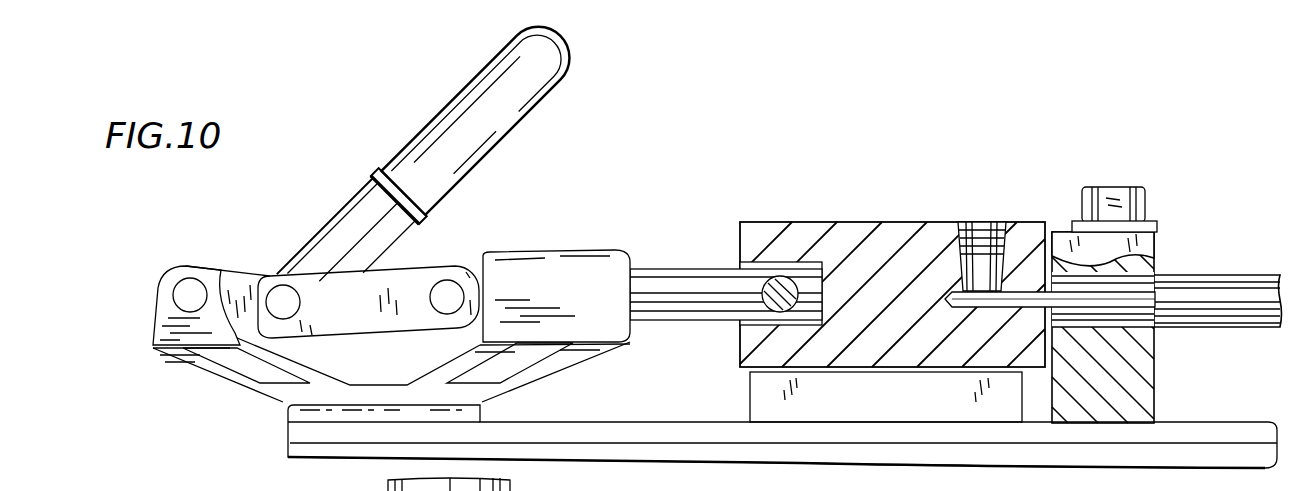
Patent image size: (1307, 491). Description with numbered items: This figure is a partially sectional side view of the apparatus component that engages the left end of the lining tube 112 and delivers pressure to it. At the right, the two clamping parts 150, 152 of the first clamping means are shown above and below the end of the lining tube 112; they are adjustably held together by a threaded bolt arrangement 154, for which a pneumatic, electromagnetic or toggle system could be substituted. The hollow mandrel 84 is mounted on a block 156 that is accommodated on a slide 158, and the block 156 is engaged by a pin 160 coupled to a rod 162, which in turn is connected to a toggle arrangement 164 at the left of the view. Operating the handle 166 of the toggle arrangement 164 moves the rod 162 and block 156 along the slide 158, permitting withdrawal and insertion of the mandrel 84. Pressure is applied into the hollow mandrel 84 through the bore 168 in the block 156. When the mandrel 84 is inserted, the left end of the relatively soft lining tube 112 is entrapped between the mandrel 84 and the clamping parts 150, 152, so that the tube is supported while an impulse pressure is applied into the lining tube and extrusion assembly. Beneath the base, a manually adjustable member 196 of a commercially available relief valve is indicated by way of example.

The hollow mandrel 84 is at (1105, 322).
The lining tube 112 is at (1158, 303).
The clamping part 150 is at (1150, 246).
The clamping part 152 is at (1140, 407).
The threaded bolt arrangement 154 is at (1117, 190).
The block 156 is at (882, 222).
The slide 158 is at (900, 405).
The pin 160 is at (785, 289).
The rod 162 is at (653, 284).
The toggle arrangement 164 is at (277, 262).
The handle 166 is at (444, 130).
The bore 168 is at (978, 223).
The manually adjustable member 196 is at (705, 489).